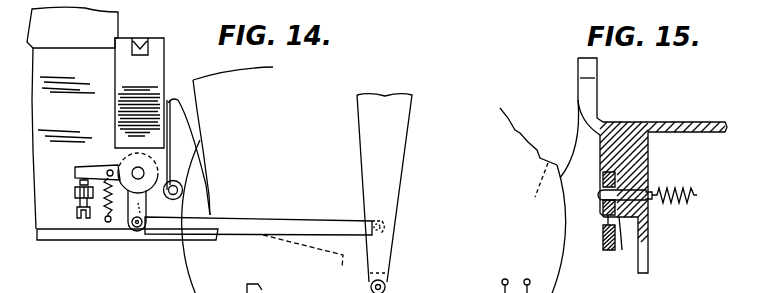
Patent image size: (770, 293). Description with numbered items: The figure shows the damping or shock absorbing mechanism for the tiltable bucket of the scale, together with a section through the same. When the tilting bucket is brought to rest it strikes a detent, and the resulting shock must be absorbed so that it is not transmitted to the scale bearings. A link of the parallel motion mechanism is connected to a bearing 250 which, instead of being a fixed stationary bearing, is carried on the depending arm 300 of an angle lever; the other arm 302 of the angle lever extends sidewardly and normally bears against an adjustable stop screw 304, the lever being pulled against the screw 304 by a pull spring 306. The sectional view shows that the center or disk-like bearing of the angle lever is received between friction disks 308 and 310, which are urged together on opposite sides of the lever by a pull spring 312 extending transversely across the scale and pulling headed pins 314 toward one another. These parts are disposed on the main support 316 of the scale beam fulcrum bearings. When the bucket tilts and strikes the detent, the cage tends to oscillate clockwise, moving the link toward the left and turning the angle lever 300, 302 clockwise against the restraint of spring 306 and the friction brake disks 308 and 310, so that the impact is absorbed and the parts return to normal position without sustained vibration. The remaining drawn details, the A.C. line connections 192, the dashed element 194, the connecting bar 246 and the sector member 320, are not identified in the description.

In FIG. 14, the A.C. line terminals 192 is at (530, 288).
In FIG. 14, the dashed linkage 194 is at (257, 288).
In FIG. 14, the connecting bar 246 is at (287, 225).
In FIG. 14, the bearing 250 is at (133, 228).
In FIG. 14, the depending arm 300 is at (143, 207).
In FIG. 15, the depending arm 300 is at (604, 222).
In FIG. 14, the sidewardly extending arm 302 is at (100, 170).
In FIG. 14, the adjustable stop screw 304 is at (78, 203).
In FIG. 14, the pull spring 306 is at (103, 207).
In FIG. 15, the friction disk 308 is at (614, 217).
In FIG. 15, the friction disk 310 is at (603, 208).
In FIG. 15, the pull spring 312 is at (678, 205).
In FIG. 15, the headed pin 314 is at (650, 202).
In FIG. 14, the main support 316 is at (177, 110).
In FIG. 15, the main support 316 is at (623, 150).
In FIG. 14, the pendulum sector 320 is at (443, 289).